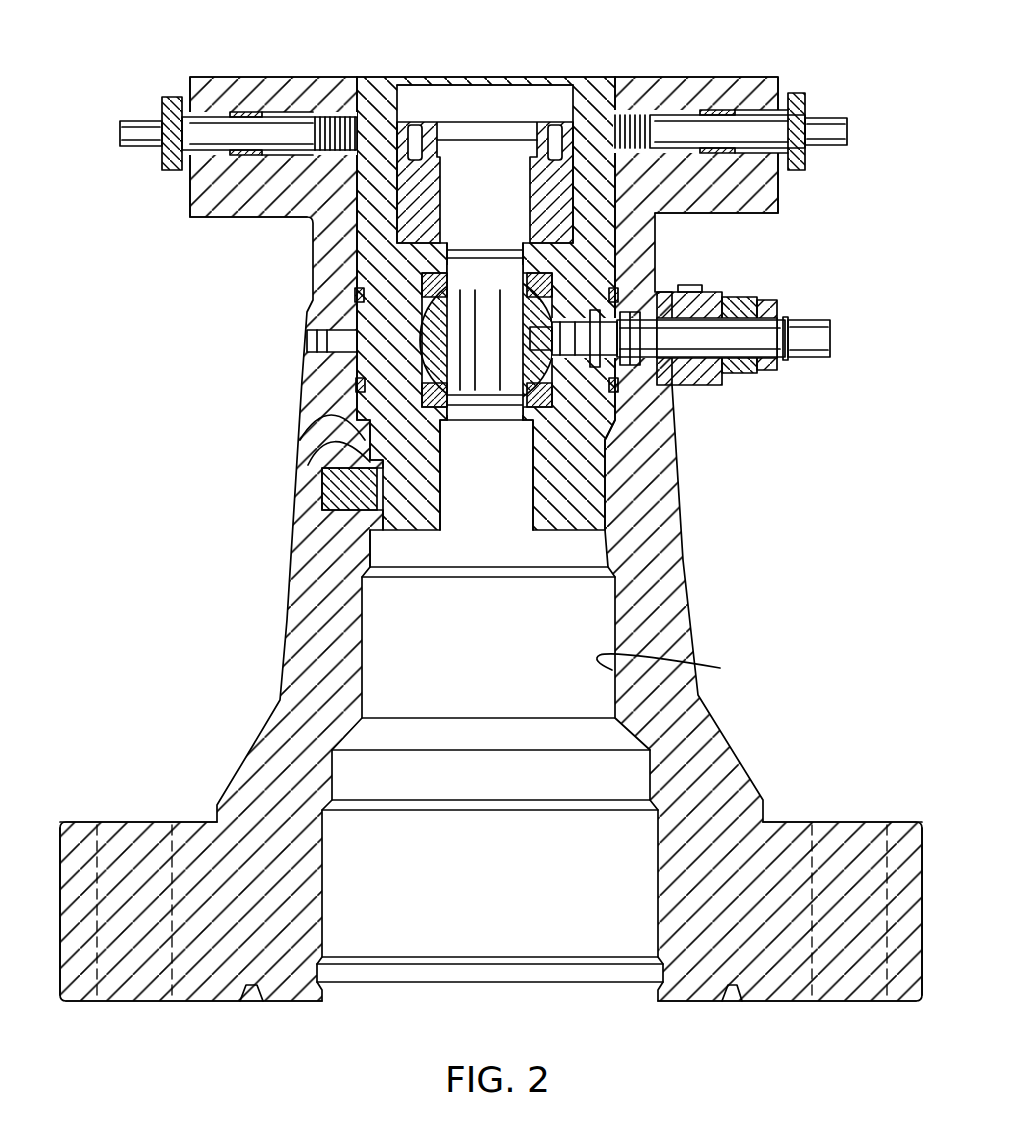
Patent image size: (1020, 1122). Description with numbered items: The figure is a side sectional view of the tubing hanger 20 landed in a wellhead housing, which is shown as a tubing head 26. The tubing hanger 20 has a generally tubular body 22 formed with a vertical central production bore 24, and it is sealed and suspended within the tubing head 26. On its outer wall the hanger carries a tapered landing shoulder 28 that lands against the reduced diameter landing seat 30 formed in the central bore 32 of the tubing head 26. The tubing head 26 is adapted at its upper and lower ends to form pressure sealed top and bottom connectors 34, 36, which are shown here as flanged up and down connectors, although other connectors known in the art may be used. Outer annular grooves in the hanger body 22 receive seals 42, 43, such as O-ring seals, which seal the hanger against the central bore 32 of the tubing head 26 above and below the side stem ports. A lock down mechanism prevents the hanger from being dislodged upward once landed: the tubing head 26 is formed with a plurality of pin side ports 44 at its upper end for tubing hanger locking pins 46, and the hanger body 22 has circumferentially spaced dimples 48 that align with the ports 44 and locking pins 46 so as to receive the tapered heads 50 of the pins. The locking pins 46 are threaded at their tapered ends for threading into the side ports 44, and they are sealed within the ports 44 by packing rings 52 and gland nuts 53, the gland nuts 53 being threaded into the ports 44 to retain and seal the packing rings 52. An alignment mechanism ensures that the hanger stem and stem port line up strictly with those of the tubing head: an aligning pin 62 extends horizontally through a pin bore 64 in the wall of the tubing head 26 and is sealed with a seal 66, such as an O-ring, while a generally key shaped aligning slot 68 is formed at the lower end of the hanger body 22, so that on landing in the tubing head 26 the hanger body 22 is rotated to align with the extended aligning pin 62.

The tubing hanger 20 is at (397, 113).
The tubular body 22 is at (372, 262).
The central production bore 24 is at (487, 386).
The tubing head 26 is at (675, 556).
The tapered landing shoulder 28 is at (612, 395).
The landing seat 30 is at (603, 423).
The central bore 32 is at (677, 667).
The top connector 34 is at (723, 83).
The bottom connector 36 is at (850, 985).
The seal 42 is at (355, 296).
The seal 43 is at (357, 385).
The pin side port 44 is at (296, 110).
The locking pin 46 is at (220, 130).
The dimple 48 is at (602, 135).
The tapered head 50 is at (373, 133).
The packing ring 52 is at (262, 112).
The gland nut 53 is at (173, 98).
The aligning pin 62 is at (330, 488).
The pin bore 64 is at (310, 424).
The seal 66 is at (352, 412).
The aligning slot 68 is at (378, 533).